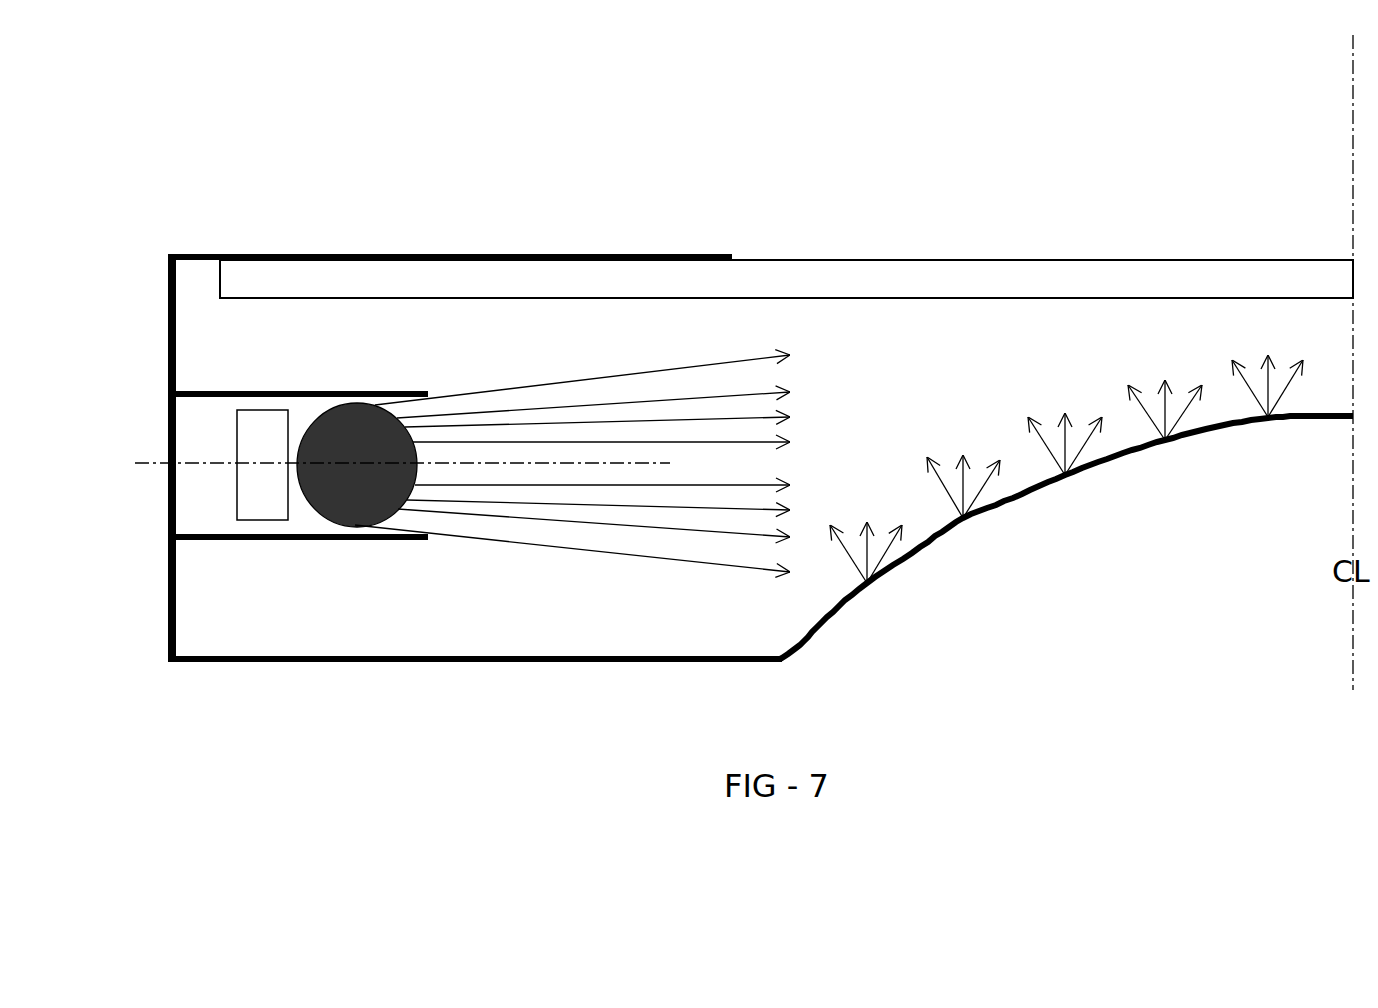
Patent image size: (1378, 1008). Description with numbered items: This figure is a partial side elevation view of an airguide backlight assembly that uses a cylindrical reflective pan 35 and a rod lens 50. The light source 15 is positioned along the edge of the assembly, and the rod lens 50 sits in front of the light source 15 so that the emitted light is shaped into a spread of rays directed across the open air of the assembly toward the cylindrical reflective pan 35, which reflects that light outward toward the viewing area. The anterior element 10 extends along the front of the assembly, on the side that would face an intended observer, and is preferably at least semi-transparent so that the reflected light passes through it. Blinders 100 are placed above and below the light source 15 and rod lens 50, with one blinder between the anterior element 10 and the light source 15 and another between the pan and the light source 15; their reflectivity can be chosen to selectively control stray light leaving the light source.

The blinders 100 is at (195, 533).
The anterior element 10 is at (786, 279).
The cylindrical reflective pan 35 is at (1020, 502).
The light source 15 is at (266, 520).
The rod lens 50 is at (355, 525).